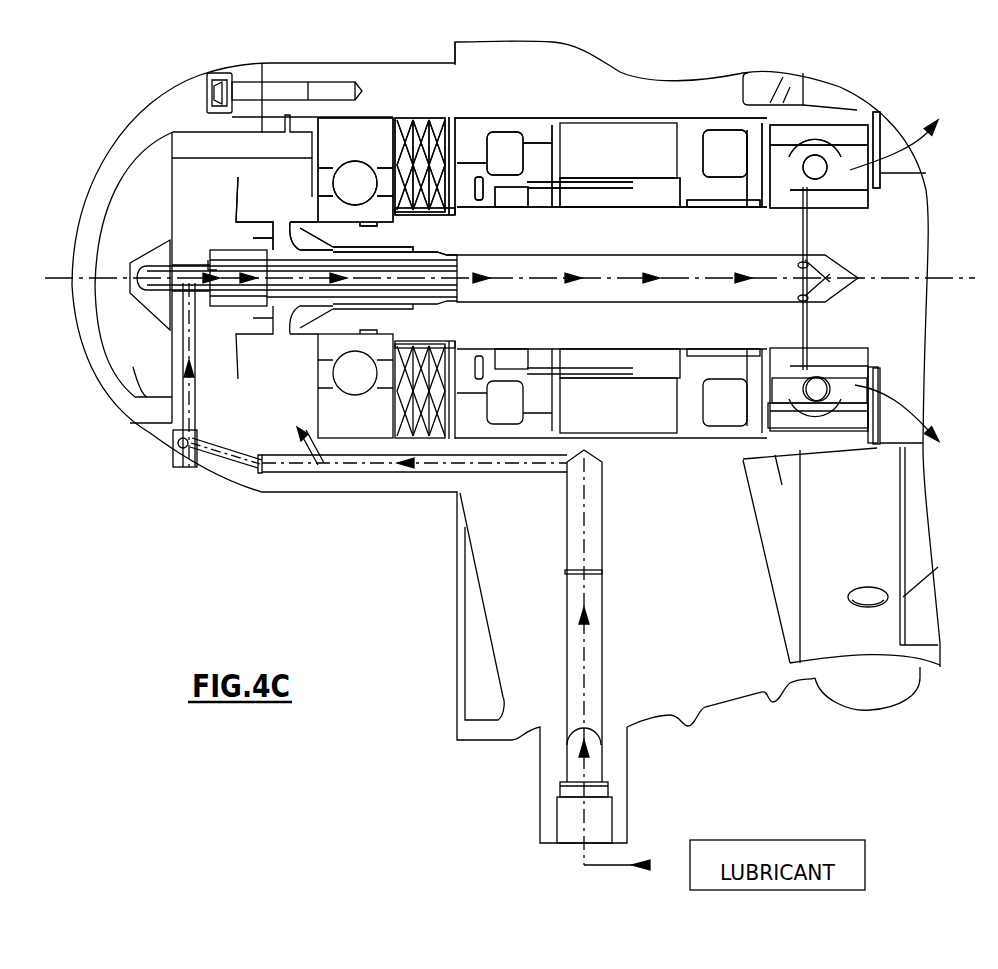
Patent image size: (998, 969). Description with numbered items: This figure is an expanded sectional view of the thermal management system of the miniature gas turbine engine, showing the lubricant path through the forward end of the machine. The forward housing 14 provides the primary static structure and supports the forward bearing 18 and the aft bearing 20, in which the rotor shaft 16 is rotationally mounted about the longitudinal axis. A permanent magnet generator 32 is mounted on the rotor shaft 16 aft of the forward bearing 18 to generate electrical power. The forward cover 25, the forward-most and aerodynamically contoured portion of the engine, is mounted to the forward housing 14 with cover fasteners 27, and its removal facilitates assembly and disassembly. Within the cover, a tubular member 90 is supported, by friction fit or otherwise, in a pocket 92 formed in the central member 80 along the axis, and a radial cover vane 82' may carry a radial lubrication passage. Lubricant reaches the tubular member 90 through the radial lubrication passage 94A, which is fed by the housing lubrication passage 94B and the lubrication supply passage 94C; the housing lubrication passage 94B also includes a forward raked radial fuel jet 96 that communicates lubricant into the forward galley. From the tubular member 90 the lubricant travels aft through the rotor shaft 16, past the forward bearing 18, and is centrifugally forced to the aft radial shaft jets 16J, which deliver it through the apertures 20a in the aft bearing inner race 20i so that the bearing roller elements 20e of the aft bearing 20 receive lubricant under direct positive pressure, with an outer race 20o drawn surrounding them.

The forward housing 14 is at (514, 51).
The rotor shaft 16 is at (915, 211).
The aft radial shaft jets 16J is at (518, 277).
The forward bearing 18 is at (375, 119).
The aft bearing 20 is at (857, 123).
The apertures 20a is at (800, 380).
The aft bearing inner race 20i is at (853, 357).
The outer race 20o is at (838, 422).
The bearing roller elements 20e is at (820, 389).
The forward cover 25 is at (163, 84).
The cover fasteners 27 is at (222, 72).
The permanent magnet generator 32 is at (621, 134).
The central member 80 is at (225, 250).
The radial cover vane 82' is at (146, 366).
The tubular member 90 is at (190, 262).
The pocket 92 is at (150, 252).
The radial lubrication passage 94A is at (180, 445).
The housing lubrication passage 94B is at (493, 473).
The lubrication supply passage 94C is at (603, 663).
The forward raked radial fuel jet 96 is at (315, 448).